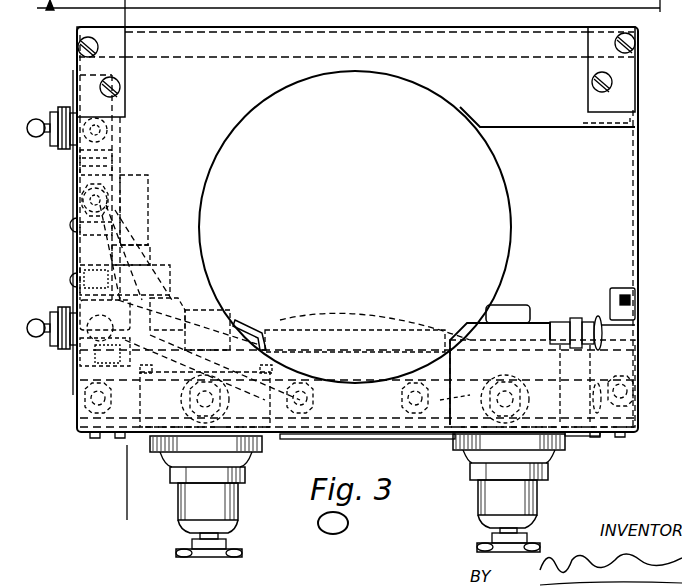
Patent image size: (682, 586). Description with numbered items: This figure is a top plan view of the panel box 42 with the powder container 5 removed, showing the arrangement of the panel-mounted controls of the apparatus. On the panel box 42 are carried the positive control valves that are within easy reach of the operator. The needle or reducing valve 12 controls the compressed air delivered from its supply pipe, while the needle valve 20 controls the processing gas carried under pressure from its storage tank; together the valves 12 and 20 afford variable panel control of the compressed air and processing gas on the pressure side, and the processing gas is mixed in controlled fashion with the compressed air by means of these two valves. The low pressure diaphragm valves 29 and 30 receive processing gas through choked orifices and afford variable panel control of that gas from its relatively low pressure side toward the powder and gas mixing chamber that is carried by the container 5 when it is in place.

The needle valve 12 is at (47, 118).
The needle valve 20 is at (47, 318).
The panel box 42 is at (354, 233).
The low pressure diaphragm valve 29 is at (228, 550).
The low pressure diaphragm valve 30 is at (494, 537).
The container 5 is at (127, 510).